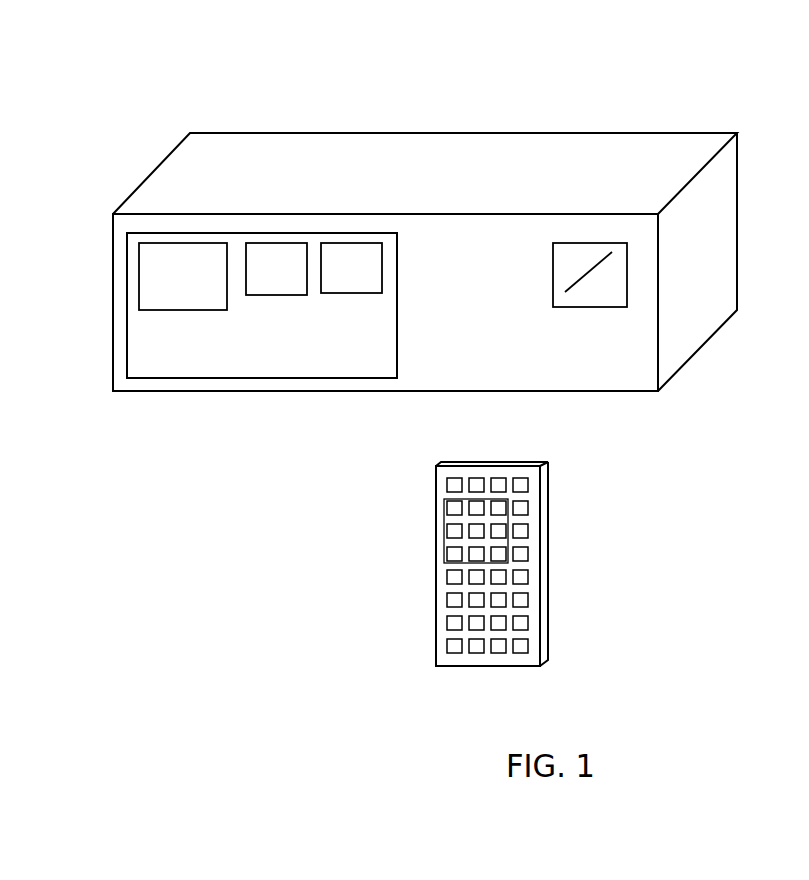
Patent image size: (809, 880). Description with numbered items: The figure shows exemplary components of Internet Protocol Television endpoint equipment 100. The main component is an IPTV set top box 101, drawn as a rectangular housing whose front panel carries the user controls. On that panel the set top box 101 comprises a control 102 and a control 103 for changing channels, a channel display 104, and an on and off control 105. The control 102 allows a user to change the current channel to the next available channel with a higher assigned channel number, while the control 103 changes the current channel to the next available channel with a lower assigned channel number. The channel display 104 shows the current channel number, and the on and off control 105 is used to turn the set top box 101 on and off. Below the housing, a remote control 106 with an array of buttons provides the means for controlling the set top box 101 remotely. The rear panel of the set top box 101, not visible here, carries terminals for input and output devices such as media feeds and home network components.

The IPTV endpoint equipment 100 is at (781, 70).
The IPTV set top box 101 is at (712, 253).
The control 102 is at (281, 243).
The control 103 is at (348, 243).
The channel display 104 is at (148, 275).
The on and off control 105 is at (592, 243).
The remote control 106 is at (444, 542).